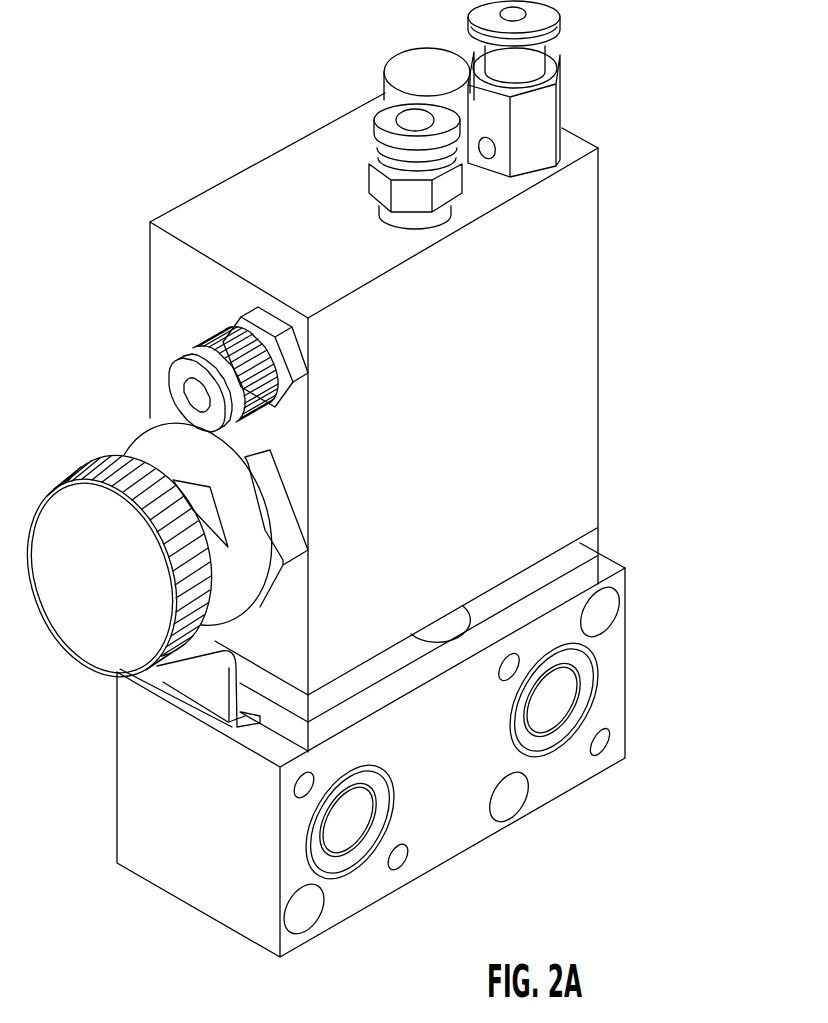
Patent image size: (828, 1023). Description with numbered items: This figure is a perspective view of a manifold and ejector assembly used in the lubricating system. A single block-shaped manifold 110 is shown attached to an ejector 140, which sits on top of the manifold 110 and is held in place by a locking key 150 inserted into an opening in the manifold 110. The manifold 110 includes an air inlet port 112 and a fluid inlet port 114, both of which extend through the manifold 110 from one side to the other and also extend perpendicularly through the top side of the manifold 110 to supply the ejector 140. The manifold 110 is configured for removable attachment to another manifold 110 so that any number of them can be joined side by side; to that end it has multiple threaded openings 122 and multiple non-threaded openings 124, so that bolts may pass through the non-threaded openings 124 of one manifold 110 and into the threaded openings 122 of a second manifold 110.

The manifold 110 is at (480, 842).
The air inlet port 112 is at (553, 722).
The fluid inlet port 114 is at (345, 837).
The threaded openings 122 is at (603, 743).
The non-threaded openings 124 is at (606, 612).
The ejector 140 is at (598, 430).
The locking key 150 is at (185, 675).